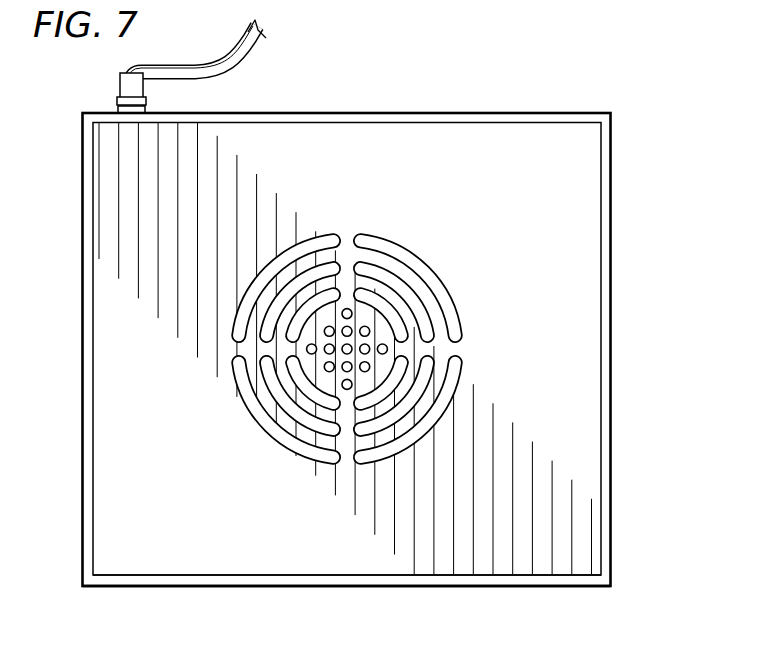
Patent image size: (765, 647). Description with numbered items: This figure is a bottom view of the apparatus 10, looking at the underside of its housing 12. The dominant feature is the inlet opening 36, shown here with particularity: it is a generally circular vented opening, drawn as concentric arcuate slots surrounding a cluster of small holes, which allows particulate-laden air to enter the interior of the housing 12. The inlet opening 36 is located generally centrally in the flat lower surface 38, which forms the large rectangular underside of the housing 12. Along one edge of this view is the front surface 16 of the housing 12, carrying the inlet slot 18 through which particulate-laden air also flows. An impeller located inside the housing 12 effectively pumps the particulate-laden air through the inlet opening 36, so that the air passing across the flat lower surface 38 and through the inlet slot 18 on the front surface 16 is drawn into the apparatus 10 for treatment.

The apparatus 10 is at (638, 383).
The housing 12 is at (612, 290).
The front surface 16 is at (365, 587).
The inlet slot 18 is at (567, 578).
The inlet opening 36 is at (433, 265).
The flat lower surface 38 is at (583, 157).